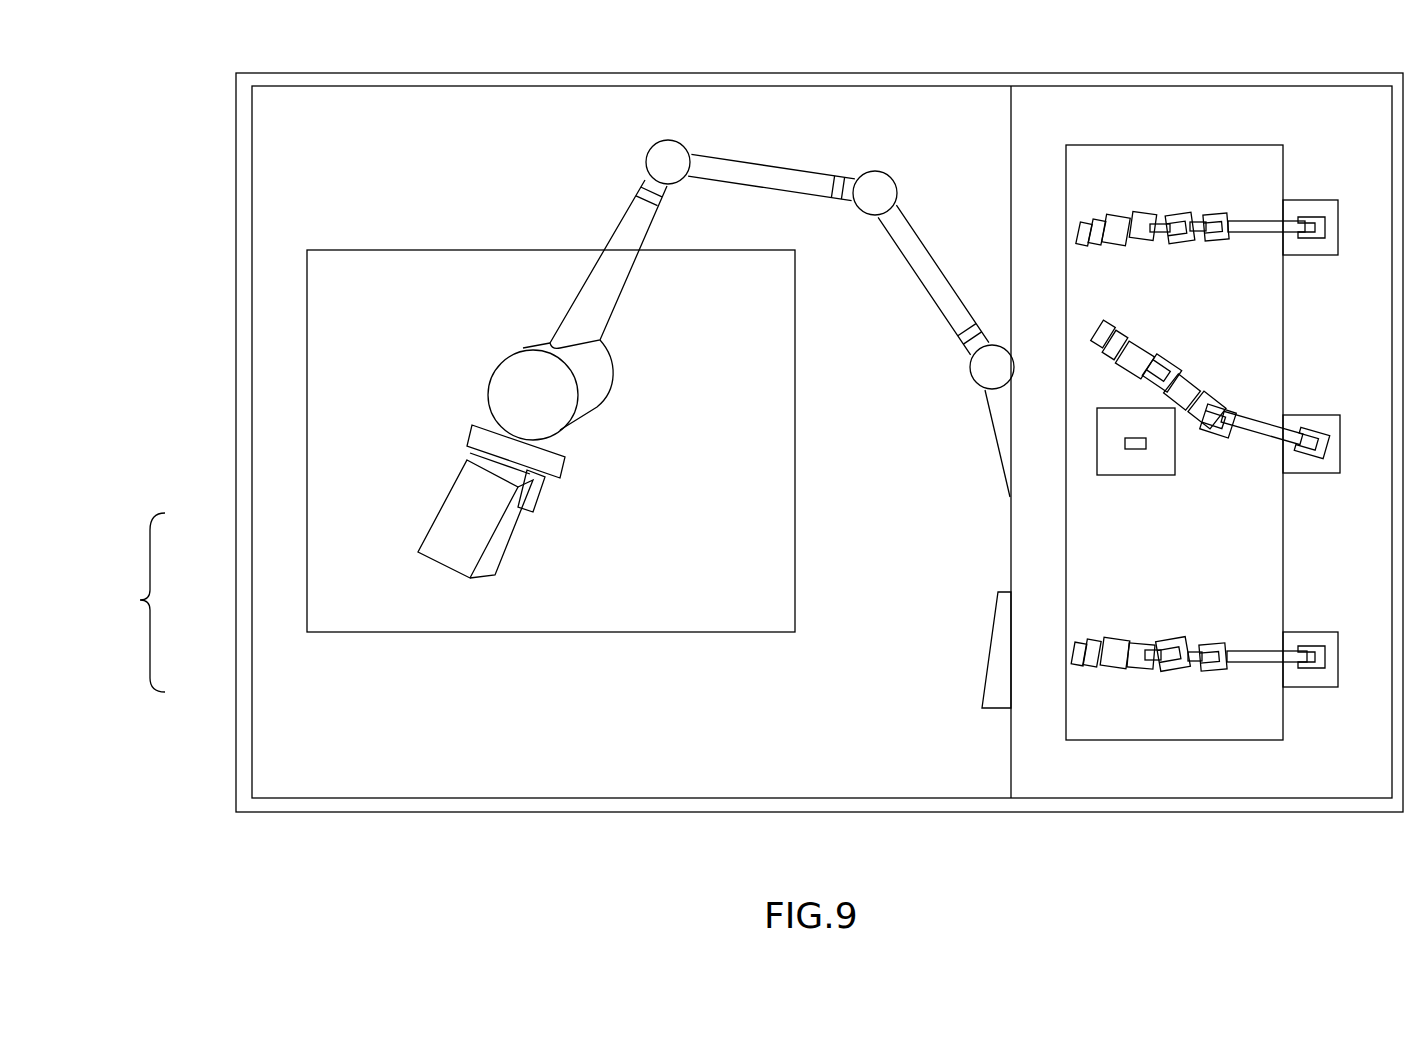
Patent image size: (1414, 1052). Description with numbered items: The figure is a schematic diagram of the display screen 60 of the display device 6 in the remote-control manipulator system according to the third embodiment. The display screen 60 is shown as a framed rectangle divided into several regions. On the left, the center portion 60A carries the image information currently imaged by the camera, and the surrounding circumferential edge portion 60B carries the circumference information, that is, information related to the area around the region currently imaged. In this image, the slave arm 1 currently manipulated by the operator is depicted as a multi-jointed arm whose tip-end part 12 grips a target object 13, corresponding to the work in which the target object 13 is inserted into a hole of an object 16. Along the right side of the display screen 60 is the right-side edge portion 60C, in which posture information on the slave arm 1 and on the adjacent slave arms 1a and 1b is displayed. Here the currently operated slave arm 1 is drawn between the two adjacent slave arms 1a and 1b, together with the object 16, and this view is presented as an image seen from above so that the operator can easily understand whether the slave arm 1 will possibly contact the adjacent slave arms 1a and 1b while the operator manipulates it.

The display device 6 is at (829, 30).
The slave arm 1 is at (797, 165).
The slave arm 1a is at (1253, 213).
The slave arm 1b is at (1245, 645).
The tip-end part 12 is at (570, 463).
The target object 13 is at (507, 533).
The object 16 is at (1175, 473).
The display screen 60 is at (140, 600).
The center portion 60A is at (277, 536).
The circumferential edge portion 60B is at (397, 589).
The right-side edge portion 60C is at (1038, 655).